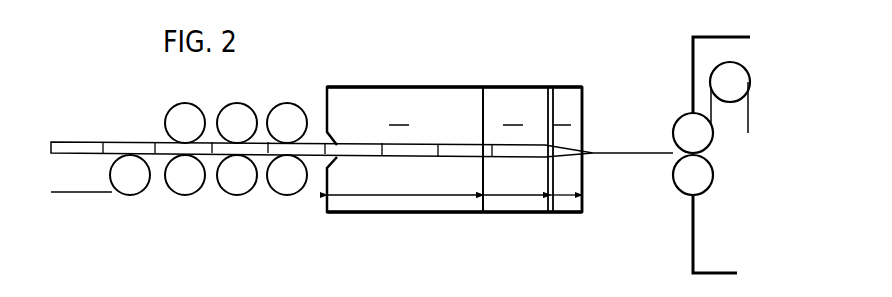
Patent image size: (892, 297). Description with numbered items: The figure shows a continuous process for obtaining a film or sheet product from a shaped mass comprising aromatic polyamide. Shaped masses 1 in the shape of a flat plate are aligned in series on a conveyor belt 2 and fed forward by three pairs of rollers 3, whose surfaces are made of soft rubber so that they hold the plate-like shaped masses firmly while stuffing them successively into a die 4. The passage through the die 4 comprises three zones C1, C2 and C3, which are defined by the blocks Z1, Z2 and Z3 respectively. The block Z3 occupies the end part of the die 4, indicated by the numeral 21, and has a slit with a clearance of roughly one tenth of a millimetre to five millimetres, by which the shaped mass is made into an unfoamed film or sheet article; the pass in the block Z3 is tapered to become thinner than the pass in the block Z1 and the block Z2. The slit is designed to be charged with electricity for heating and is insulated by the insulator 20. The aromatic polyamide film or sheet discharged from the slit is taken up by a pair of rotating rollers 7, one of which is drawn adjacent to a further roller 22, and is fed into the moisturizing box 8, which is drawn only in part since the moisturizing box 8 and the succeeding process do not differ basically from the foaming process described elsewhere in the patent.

The shaped masses 1 is at (83, 140).
The conveyor belt 2 is at (72, 193).
The pair of rollers 3 is at (200, 97).
The die 4 is at (463, 147).
The rotating rollers 7 is at (683, 178).
The moisturizing box 8 is at (723, 35).
The insulator 20 is at (551, 92).
The end part of the die 21 is at (568, 95).
The roller 22 is at (637, 152).
The block Z1 is at (403, 114).
The block Z2 is at (517, 114).
The block Z3 is at (567, 114).
The first zone C1 is at (400, 197).
The second zone C2 is at (513, 197).
The third zone C3 is at (563, 197).